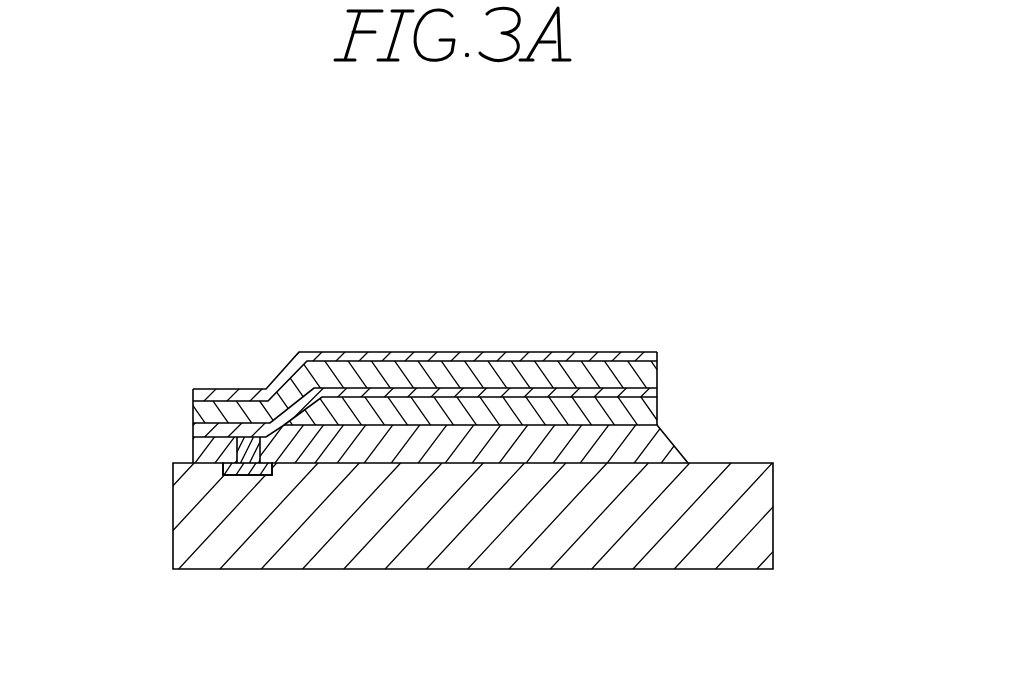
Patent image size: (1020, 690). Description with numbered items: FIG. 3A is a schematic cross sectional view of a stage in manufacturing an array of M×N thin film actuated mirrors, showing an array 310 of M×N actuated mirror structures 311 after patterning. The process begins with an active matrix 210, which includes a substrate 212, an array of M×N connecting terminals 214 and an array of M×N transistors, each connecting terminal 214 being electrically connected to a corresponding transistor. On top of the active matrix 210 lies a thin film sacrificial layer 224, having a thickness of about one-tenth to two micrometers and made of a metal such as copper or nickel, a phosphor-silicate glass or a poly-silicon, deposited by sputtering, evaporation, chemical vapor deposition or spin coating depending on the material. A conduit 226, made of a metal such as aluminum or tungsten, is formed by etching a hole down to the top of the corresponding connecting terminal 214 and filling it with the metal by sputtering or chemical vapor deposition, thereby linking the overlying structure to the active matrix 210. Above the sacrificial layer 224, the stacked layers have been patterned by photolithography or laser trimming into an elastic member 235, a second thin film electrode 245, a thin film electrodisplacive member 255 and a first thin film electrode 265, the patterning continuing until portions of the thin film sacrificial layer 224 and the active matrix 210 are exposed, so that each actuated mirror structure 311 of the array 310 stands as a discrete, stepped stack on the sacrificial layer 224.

The array of actuated mirror structures 310 is at (757, 88).
The actuated mirror structure 311 is at (656, 185).
The active matrix 210 is at (790, 463).
The substrate 212 is at (410, 556).
The connecting terminal 214 is at (242, 478).
The thin film sacrificial layer 224 is at (558, 443).
The conduit 226 is at (250, 454).
The elastic member 235 is at (571, 412).
The second thin film electrode 245 is at (410, 393).
The thin film electrodisplacive member 255 is at (492, 372).
The first thin film electrode 265 is at (327, 357).